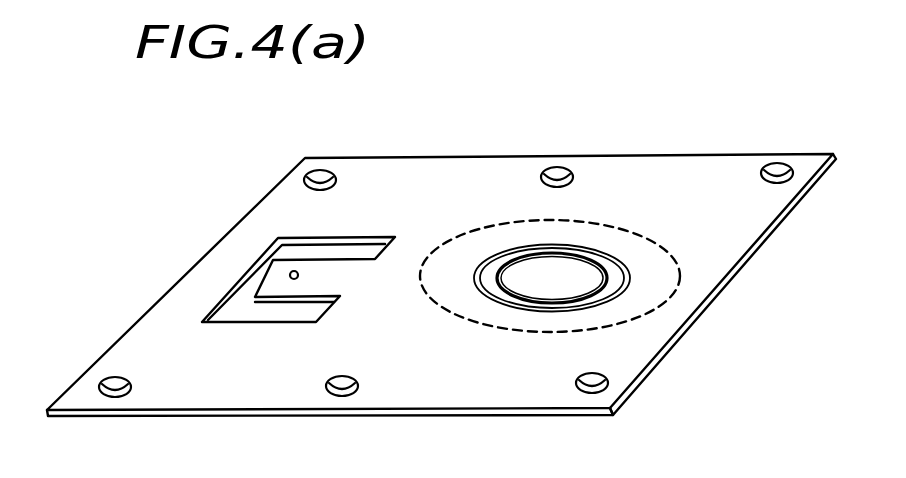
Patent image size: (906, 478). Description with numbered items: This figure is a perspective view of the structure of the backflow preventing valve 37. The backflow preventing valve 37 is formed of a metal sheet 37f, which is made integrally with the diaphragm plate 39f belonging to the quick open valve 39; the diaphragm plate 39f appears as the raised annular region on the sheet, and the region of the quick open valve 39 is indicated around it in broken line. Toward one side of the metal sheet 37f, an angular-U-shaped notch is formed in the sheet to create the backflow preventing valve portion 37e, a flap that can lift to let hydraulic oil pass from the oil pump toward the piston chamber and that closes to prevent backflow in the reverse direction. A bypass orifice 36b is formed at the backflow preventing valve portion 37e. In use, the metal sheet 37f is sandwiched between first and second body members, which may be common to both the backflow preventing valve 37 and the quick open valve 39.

The bypass orifice 36b is at (291, 272).
The backflow preventing valve 37 is at (373, 218).
The backflow preventing valve portion 37e is at (332, 277).
The metal sheet 37f is at (692, 295).
The quick open valve 39 is at (643, 233).
The diaphragm plate 39f is at (567, 275).